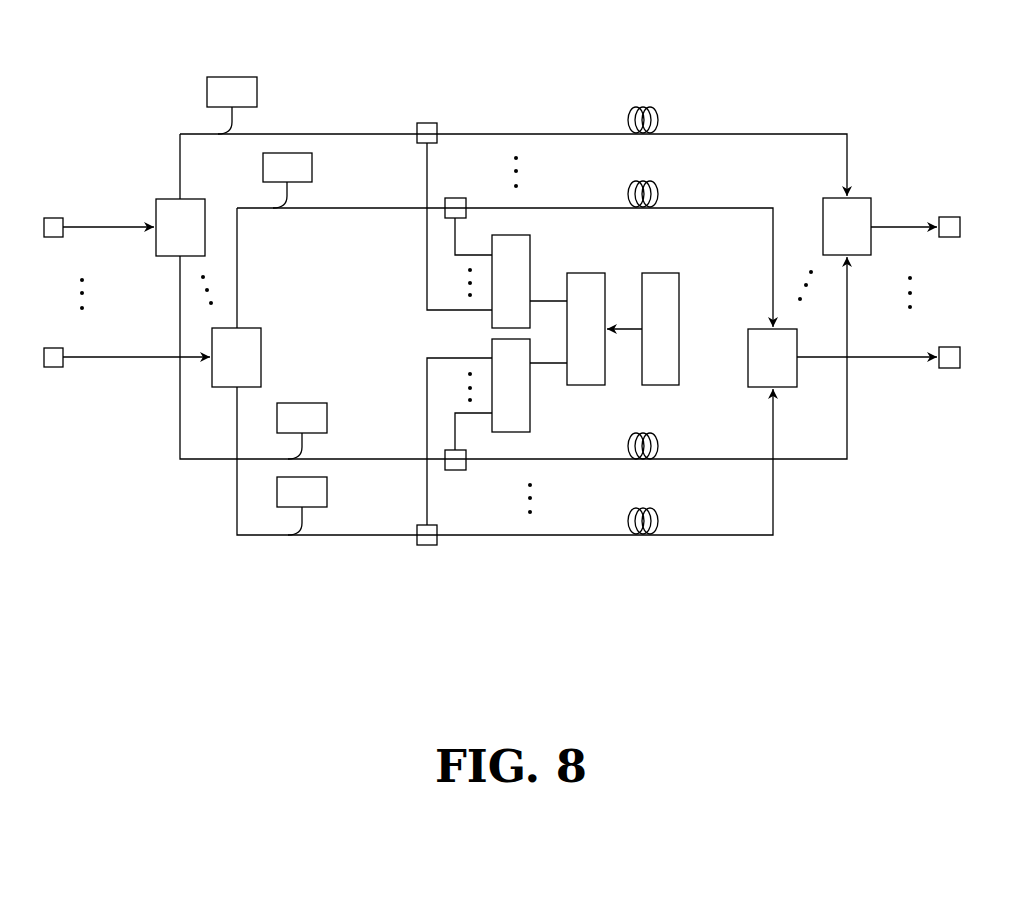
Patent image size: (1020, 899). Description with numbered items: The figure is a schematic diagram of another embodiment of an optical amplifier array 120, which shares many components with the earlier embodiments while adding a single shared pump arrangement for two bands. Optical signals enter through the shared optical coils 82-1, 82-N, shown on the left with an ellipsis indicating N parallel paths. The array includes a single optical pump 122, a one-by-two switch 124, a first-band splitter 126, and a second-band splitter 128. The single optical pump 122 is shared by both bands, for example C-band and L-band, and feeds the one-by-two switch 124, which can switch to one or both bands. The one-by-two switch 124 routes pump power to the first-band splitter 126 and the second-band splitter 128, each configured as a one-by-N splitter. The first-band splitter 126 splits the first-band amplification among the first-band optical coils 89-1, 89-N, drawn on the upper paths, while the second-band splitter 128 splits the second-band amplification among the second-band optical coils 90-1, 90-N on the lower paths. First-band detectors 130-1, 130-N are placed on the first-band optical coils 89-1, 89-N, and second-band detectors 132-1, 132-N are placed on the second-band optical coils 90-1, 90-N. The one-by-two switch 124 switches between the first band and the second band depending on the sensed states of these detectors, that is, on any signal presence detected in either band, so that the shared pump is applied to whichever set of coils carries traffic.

The optical amplifier array 120 is at (803, 621).
The shared optical coil 82-1 is at (85, 215).
The shared optical coil 82-N is at (83, 358).
The first-band detector 130-1 is at (224, 77).
The first-band detector 130-N is at (285, 153).
The second-band detector 132-1 is at (296, 403).
The second-band detector 132-N is at (277, 492).
The first-band splitter 126 is at (530, 264).
The second-band splitter 128 is at (530, 405).
The 1×2 switch 124 is at (586, 273).
The single optical pump 122 is at (660, 273).
The first-band optical coil 89-1 is at (688, 133).
The first-band optical coil 89-N is at (688, 207).
The second-band optical coil 90-1 is at (683, 459).
The second-band optical coil 90-N is at (680, 534).